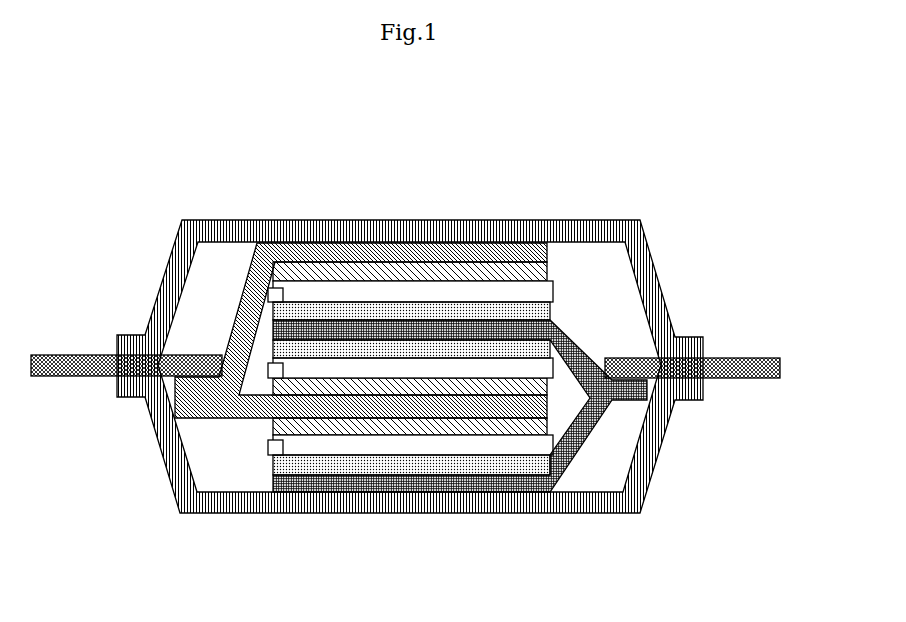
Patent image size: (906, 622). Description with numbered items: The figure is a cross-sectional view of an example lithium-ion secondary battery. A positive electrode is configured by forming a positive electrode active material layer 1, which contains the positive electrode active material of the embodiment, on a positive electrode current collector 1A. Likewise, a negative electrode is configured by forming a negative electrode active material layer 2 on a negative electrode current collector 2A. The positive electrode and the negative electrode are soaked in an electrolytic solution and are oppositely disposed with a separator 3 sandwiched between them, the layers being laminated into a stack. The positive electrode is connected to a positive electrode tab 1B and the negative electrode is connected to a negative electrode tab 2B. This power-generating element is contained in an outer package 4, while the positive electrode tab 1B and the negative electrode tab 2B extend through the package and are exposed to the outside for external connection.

The positive electrode active material layer 1 is at (527, 465).
The positive electrode current collector 1A is at (518, 478).
The positive electrode tab 1B is at (690, 365).
The negative electrode active material layer 2 is at (338, 428).
The negative electrode current collector 2A is at (192, 405).
The negative electrode tab 2B is at (117, 370).
The separator 3 is at (280, 445).
The outer package 4 is at (178, 500).